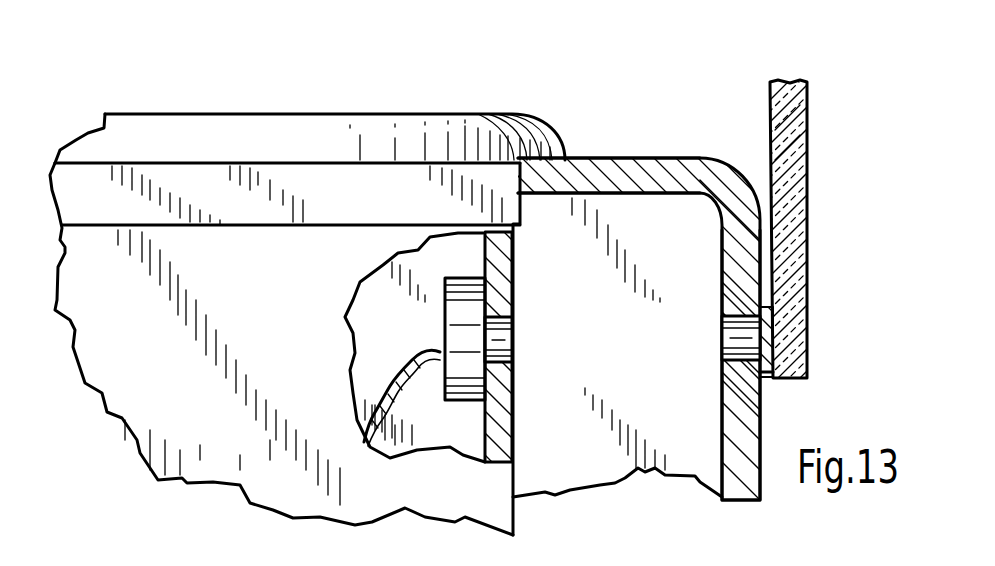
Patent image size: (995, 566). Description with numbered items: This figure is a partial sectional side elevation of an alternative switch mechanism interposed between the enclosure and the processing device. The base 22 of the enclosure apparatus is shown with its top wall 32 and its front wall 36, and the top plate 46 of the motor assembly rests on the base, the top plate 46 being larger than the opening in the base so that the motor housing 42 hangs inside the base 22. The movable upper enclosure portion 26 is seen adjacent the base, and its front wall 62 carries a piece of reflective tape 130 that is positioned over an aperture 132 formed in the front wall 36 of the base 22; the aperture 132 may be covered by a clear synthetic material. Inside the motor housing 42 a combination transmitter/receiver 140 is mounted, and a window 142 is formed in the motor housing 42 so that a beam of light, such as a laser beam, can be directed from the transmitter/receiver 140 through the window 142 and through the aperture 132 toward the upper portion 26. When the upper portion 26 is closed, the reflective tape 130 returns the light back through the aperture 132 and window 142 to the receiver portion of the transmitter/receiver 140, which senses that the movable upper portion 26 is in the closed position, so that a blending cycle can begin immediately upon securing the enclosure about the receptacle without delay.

The base 22 is at (655, 158).
The movable upper enclosure portion 26 is at (810, 103).
The top wall 32 is at (611, 158).
The front wall 36 is at (745, 420).
The motor housing 42 is at (513, 272).
The top plate 46 is at (346, 113).
The front wall 62 is at (798, 142).
The reflective tape 130 is at (722, 385).
The aperture 132 is at (722, 333).
The transmitter/receiver 140 is at (458, 336).
The window 142 is at (514, 340).